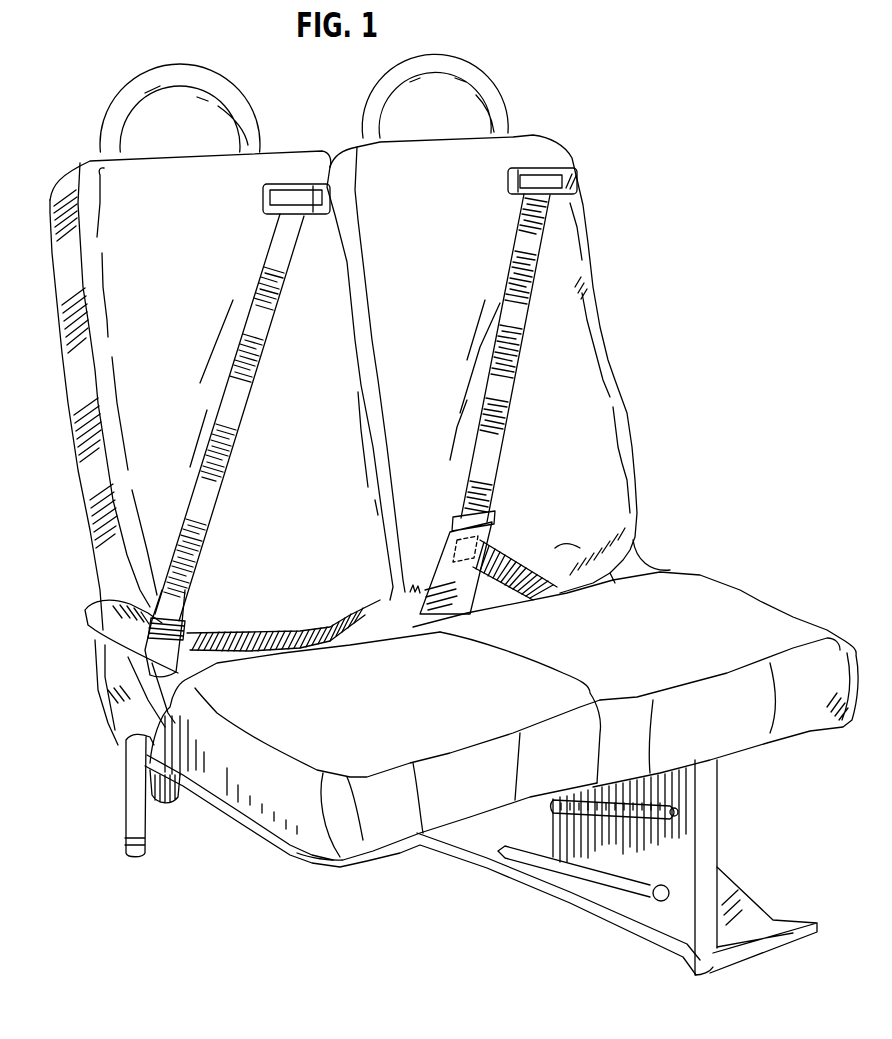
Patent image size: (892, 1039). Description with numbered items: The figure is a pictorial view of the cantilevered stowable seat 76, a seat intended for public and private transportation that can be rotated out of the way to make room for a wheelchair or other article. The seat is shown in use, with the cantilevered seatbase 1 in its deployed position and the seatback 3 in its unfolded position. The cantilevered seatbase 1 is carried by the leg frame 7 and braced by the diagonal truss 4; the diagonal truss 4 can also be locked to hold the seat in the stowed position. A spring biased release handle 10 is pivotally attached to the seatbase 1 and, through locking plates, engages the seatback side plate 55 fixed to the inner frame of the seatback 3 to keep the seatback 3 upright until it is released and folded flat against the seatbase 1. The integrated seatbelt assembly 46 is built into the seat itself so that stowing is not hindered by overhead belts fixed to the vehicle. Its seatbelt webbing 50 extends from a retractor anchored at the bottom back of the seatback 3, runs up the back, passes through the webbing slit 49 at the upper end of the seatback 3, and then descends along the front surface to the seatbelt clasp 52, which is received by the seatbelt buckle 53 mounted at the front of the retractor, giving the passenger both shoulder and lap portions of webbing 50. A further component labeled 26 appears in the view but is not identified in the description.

The cantilevered seatbase 1 is at (737, 603).
The seatback 3 is at (90, 163).
The diagonal truss 4 is at (480, 856).
The leg frame 7 is at (710, 818).
The spring biased release handle 10 is at (145, 824).
The cross rod 26 is at (665, 822).
The integrated seatbelt assembly 46 is at (284, 182).
The webbing slit 49 is at (310, 186).
The seatbelt webbing 50 is at (550, 323).
The seatbelt clasp 52 is at (497, 523).
The seatbelt buckle 53 is at (560, 513).
The seatback side plate 55 is at (173, 667).
The cantilevered stowable seat 76 is at (132, 83).